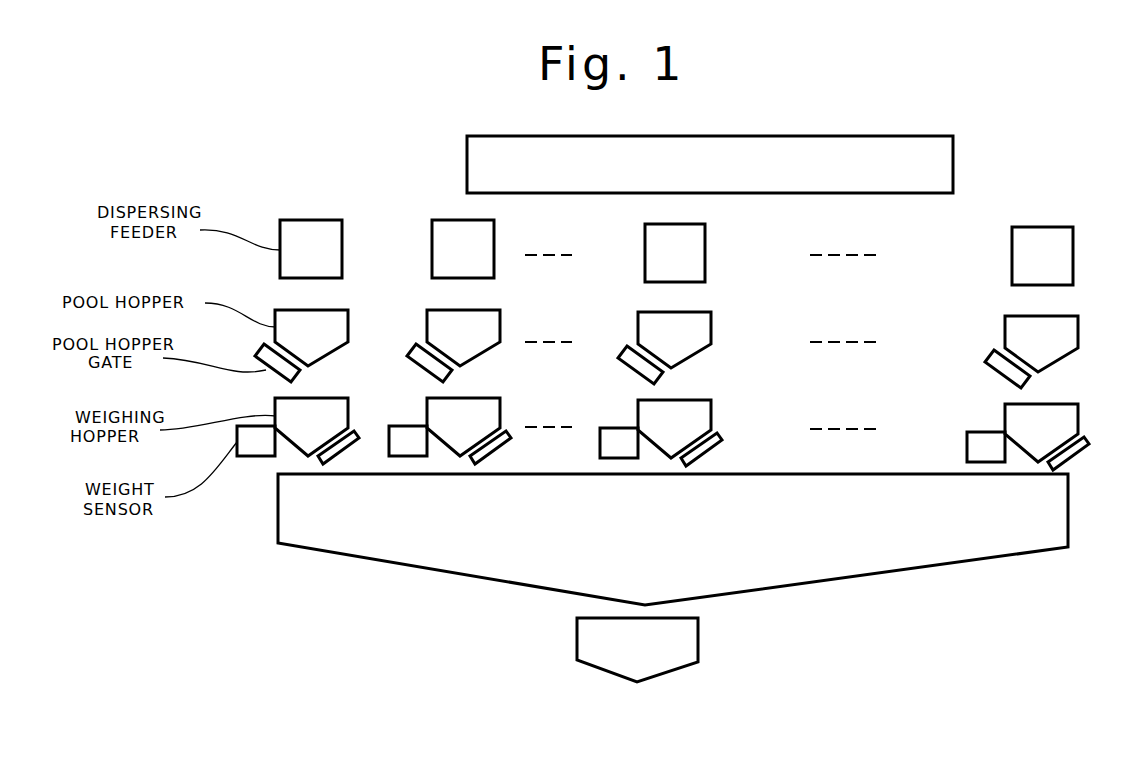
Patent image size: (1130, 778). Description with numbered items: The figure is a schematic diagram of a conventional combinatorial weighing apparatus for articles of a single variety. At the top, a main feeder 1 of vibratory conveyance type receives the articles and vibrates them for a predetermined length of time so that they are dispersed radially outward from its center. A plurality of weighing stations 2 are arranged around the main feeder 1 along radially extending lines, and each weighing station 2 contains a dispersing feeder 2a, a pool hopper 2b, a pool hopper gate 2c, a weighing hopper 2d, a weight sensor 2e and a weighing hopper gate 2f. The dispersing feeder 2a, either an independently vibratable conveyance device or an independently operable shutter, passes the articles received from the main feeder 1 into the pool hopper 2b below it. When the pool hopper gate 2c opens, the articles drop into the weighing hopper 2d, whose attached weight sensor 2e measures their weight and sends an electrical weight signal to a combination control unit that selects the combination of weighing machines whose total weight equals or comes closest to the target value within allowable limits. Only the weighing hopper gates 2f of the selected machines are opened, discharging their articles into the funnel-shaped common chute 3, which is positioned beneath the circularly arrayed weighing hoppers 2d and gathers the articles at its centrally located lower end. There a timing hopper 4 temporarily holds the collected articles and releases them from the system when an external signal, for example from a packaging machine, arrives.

The main feeder 1 is at (722, 136).
The weighing station 2 is at (282, 171).
The dispersing feeder 2a is at (286, 232).
The pool hopper 2b is at (278, 318).
The pool hopper gate 2c is at (266, 359).
The weighing hopper 2d is at (274, 412).
The weight sensor 2e is at (247, 456).
The weighing hopper gate 2f is at (328, 466).
The common chute 3 is at (850, 578).
The timing hopper 4 is at (698, 644).